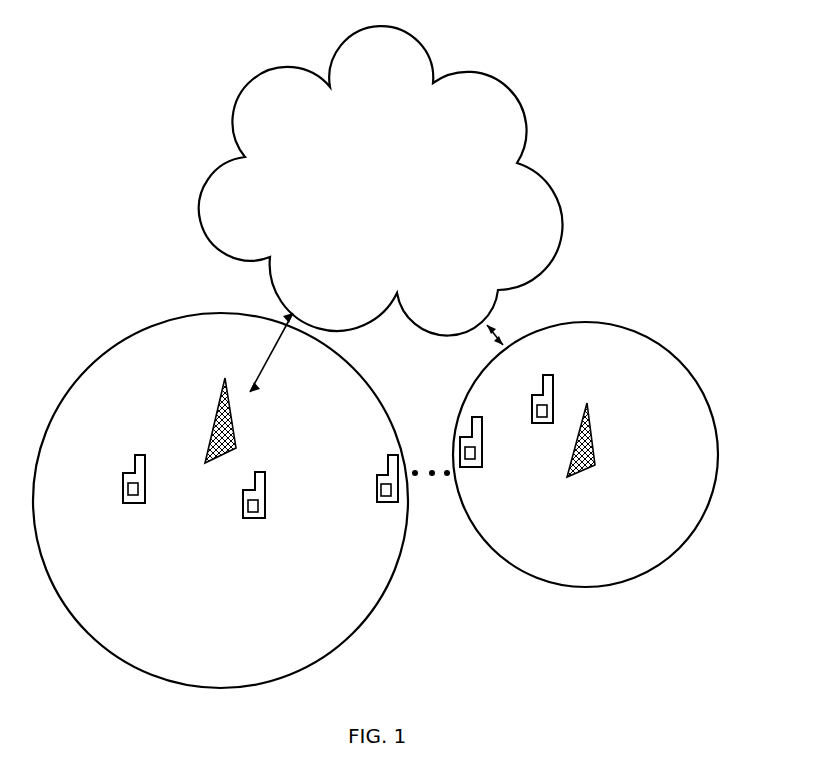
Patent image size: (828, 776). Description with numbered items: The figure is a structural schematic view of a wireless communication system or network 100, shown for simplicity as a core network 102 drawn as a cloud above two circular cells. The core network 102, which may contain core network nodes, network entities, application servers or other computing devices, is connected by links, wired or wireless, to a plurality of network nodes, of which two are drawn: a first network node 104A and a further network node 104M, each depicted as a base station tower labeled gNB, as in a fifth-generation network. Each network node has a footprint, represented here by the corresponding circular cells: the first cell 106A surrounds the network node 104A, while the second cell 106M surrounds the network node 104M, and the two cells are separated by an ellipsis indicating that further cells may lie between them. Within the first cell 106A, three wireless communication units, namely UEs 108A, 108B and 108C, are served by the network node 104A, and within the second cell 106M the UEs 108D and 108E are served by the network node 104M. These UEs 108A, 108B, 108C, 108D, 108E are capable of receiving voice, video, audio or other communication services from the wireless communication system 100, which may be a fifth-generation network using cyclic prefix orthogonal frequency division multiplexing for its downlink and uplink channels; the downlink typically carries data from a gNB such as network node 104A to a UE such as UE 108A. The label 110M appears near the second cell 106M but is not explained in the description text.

The wireless communication system 100 is at (555, 47).
The core network 102 is at (530, 143).
The network node 104A is at (233, 425).
The network node 104M is at (594, 440).
The cell 106A is at (370, 618).
The cell 106M is at (585, 587).
The wireless communication unit 108A is at (265, 500).
The wireless communication unit 108B is at (398, 497).
The wireless communication unit 108C is at (145, 483).
The wireless communication unit 108D is at (553, 398).
The wireless communication unit 108E is at (473, 420).
The network / cell group 110M is at (570, 514).